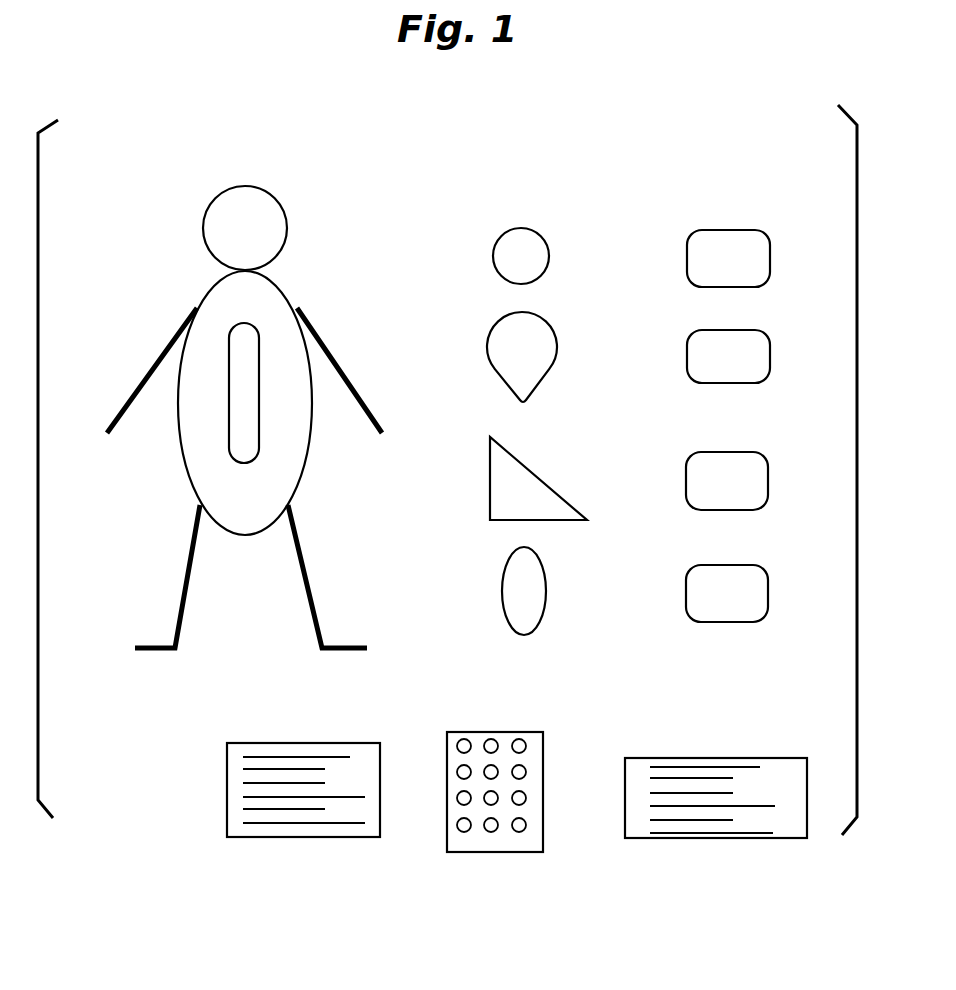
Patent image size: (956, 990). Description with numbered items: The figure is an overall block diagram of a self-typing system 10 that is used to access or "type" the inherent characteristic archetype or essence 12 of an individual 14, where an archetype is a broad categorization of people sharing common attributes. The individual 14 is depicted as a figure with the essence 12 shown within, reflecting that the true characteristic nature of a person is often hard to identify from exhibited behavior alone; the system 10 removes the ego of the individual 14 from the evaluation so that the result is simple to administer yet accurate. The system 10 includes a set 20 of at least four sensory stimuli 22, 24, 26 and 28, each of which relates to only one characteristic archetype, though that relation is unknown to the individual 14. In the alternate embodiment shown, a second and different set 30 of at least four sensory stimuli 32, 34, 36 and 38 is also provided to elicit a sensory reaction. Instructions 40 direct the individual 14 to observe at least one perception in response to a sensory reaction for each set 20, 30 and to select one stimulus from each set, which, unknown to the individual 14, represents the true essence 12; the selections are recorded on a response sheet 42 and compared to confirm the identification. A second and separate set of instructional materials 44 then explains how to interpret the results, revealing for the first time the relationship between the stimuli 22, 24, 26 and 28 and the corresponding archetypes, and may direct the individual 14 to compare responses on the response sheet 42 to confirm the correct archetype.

The self-typing system 10 is at (352, 168).
The inherent characteristic archetype or essence 12 is at (232, 330).
The individual 14 is at (178, 392).
The set of sensory stimuli 20 is at (520, 206).
The sensory stimulus 22 is at (546, 270).
The sensory stimulus 24 is at (556, 345).
The sensory stimulus 26 is at (535, 470).
The sensory stimulus 28 is at (547, 583).
The second set of sensory stimuli 30 is at (719, 214).
The sensory stimulus 32 is at (771, 270).
The sensory stimulus 34 is at (771, 356).
The sensory stimulus 36 is at (769, 468).
The sensory stimulus 38 is at (769, 583).
The instructions 40 is at (227, 812).
The response sheet 42 is at (483, 732).
The second set of instructional materials 44 is at (720, 758).